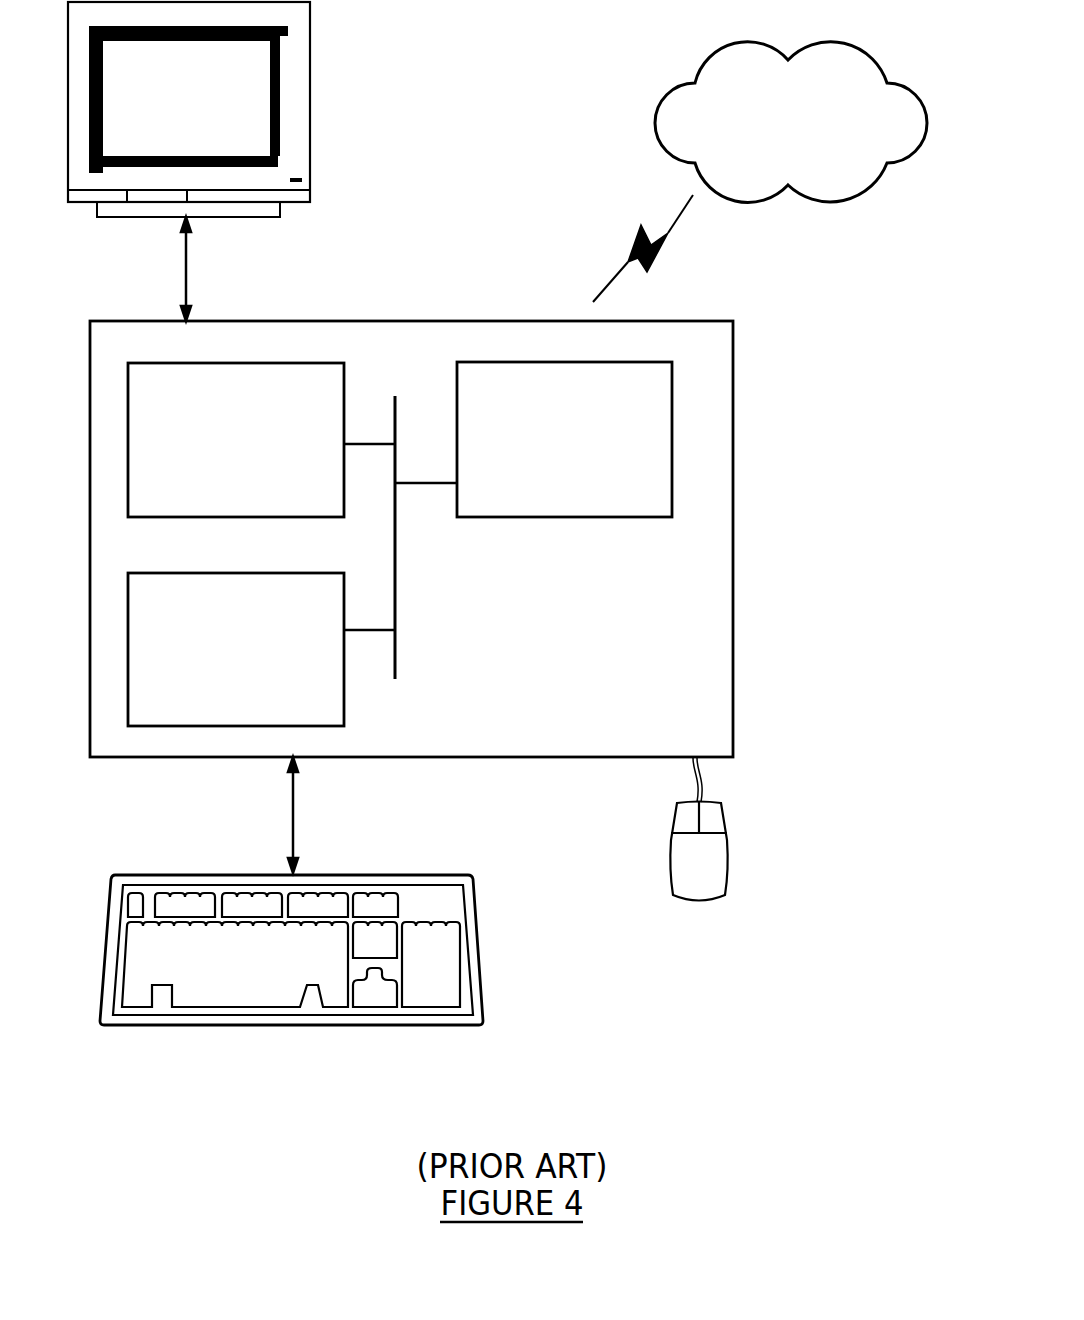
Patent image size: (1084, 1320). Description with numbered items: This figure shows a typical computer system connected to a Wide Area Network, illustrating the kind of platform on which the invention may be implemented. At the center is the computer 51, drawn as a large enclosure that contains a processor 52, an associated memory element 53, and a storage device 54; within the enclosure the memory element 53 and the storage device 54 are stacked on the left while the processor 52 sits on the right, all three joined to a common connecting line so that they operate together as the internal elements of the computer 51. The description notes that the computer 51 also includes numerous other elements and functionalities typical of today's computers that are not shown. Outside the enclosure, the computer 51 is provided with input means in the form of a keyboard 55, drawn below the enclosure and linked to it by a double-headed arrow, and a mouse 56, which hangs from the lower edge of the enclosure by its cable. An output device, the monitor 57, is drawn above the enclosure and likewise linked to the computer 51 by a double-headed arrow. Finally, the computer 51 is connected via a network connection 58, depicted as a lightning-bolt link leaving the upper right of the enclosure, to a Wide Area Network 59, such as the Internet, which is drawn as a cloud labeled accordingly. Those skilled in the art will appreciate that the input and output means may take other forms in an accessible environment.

The computer 51 is at (733, 628).
The processor 52 is at (566, 455).
The memory element 53 is at (220, 458).
The storage device 54 is at (220, 668).
The keyboard 55 is at (201, 976).
The mouse 56 is at (683, 876).
The monitor 57 is at (167, 122).
The network connection 58 is at (635, 243).
The Wide Area Network (WAN) 59 is at (747, 42).